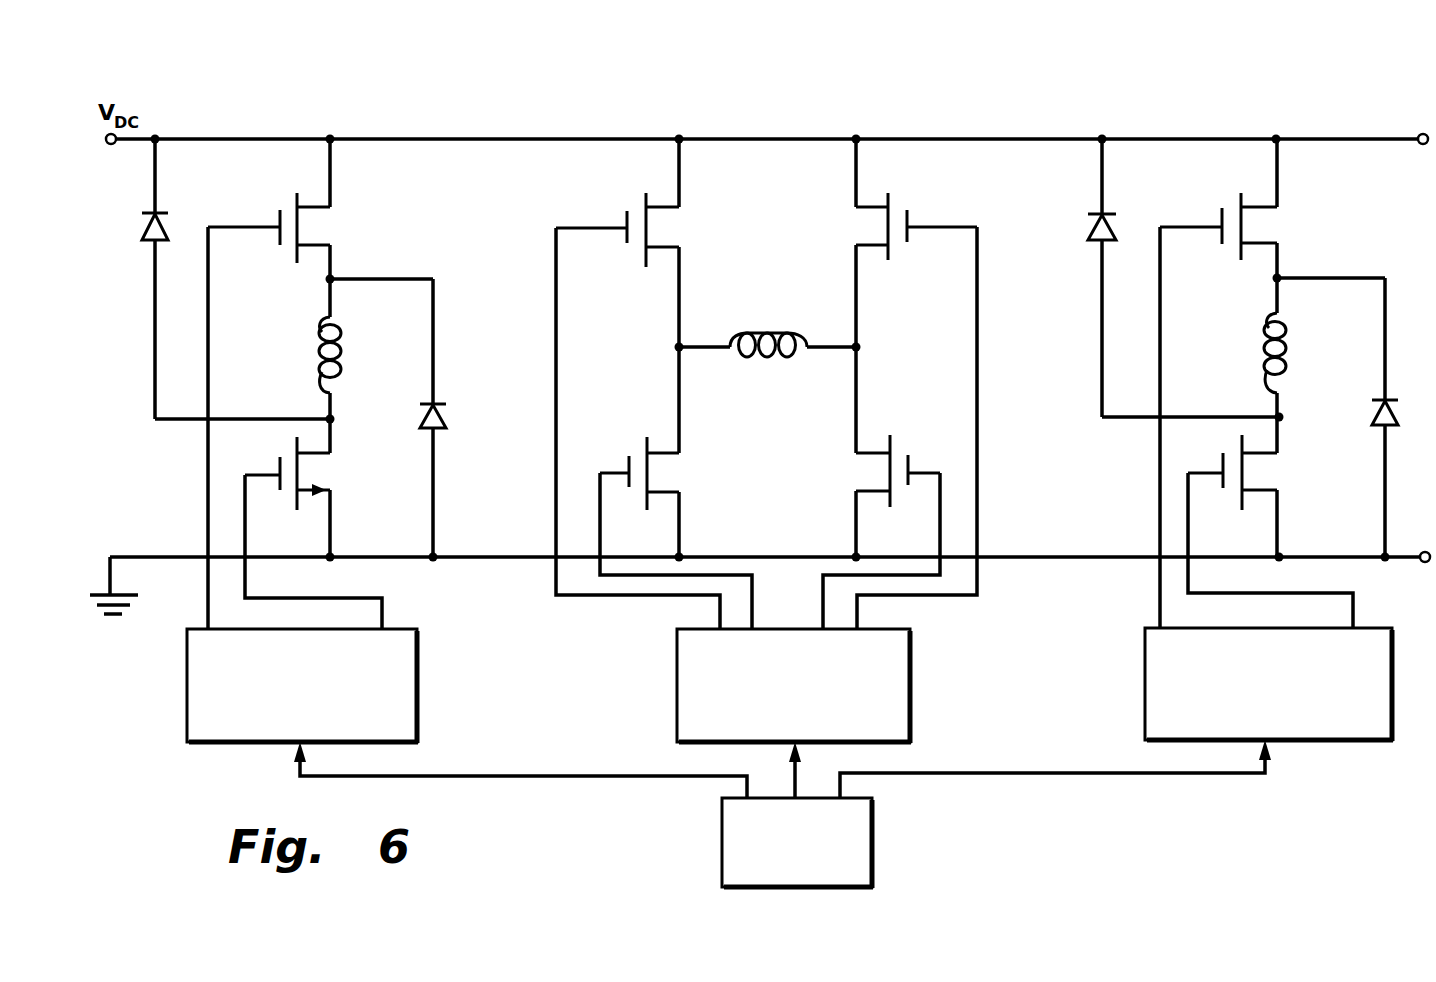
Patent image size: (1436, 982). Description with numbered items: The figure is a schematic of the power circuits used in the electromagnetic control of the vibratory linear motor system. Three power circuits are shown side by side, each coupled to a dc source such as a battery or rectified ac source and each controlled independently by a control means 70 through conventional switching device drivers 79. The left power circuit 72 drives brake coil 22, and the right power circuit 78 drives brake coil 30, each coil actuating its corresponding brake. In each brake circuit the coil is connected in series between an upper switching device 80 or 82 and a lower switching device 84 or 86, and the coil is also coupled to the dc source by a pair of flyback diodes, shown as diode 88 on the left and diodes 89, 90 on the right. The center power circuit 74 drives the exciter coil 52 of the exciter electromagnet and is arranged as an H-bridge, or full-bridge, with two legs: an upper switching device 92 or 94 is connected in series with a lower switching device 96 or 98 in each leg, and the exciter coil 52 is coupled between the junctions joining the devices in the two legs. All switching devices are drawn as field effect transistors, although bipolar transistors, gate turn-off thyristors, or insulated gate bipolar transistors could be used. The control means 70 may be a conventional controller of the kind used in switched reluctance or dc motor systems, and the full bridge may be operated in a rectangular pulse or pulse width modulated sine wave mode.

The power circuit 72 is at (292, 120).
The power circuit 74 is at (890, 120).
The second brake switching circuit 78 is at (1292, 120).
The upper switching device 80 is at (297, 200).
The upper switching device 82 is at (1268, 215).
The lower switching device 84 is at (322, 446).
The lower switching device 86 is at (1243, 492).
The brake coil 22 is at (320, 322).
The brake coil 30 is at (1285, 330).
The exciter coil 52 is at (742, 336).
The flyback diode 88 is at (440, 404).
The flyback diode 89 is at (1090, 222).
The flyback diode 90 is at (1375, 414).
The upper switching device 92 is at (668, 228).
The upper switching device 94 is at (870, 225).
The lower switching device 96 is at (648, 440).
The lower switching device 98 is at (895, 437).
The switching device driver 79 is at (677, 680).
The control means 70 is at (872, 838).